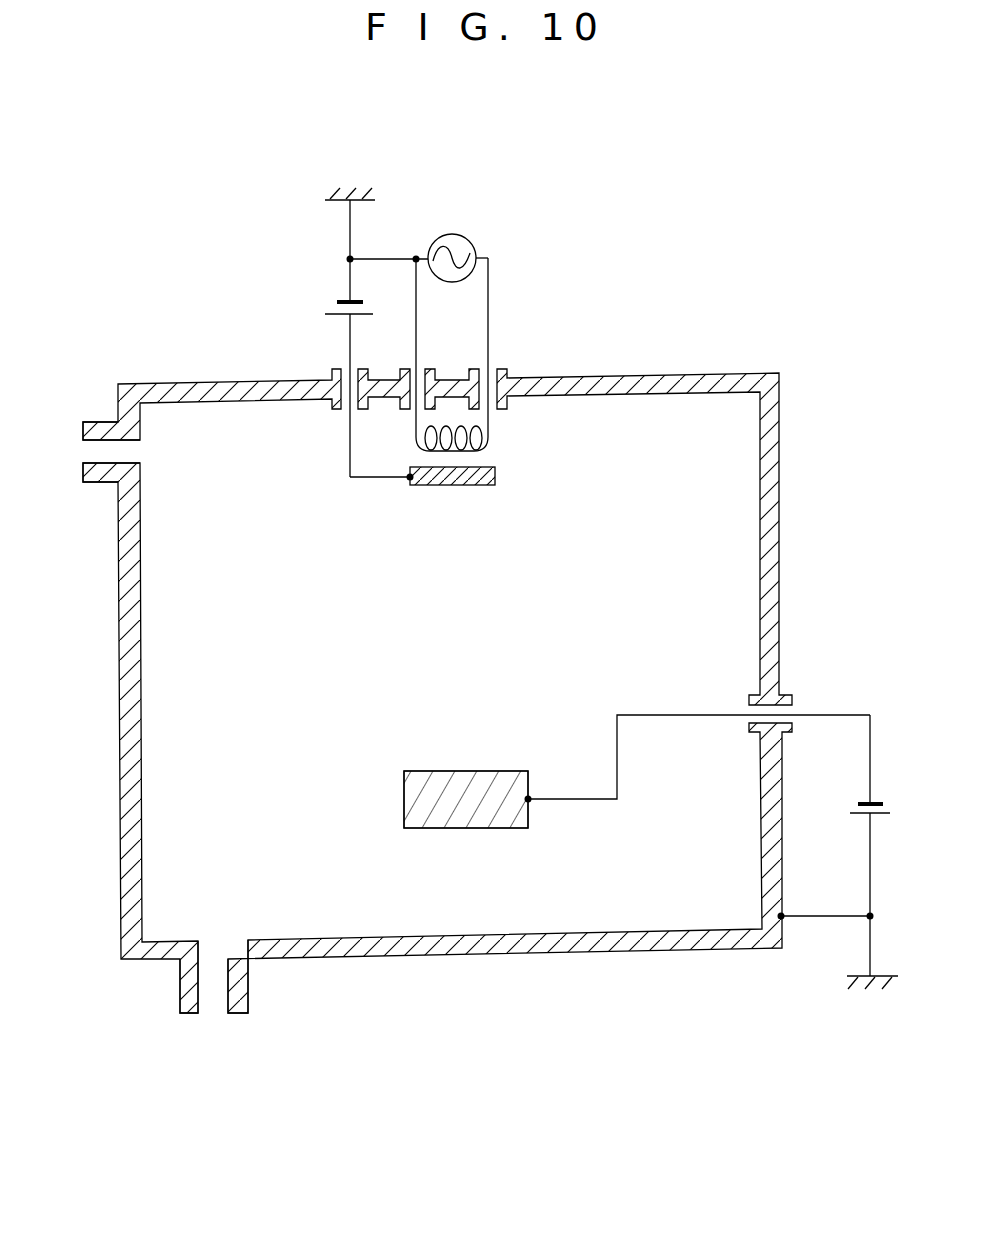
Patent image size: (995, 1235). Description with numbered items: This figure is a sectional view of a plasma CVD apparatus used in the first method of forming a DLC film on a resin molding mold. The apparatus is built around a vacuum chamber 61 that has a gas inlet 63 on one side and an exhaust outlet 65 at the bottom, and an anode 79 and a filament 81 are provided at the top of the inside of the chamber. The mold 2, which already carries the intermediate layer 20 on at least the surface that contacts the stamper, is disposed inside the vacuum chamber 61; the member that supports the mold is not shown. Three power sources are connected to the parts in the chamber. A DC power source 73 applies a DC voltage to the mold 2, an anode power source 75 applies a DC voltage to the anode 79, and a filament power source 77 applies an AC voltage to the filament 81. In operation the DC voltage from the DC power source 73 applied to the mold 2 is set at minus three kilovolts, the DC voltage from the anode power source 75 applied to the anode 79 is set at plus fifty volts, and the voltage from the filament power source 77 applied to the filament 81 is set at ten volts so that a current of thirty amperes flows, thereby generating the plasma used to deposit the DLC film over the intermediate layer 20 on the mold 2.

The mold 2 is at (457, 784).
The intermediate layer 20 is at (503, 770).
The vacuum chamber 61 is at (560, 955).
The gas inlet 63 is at (95, 456).
The exhaust outlet 65 is at (210, 1008).
The DC power source 73 is at (857, 818).
The anode power source 75 is at (325, 310).
The filament power source 77 is at (465, 234).
The anode 79 is at (453, 487).
The filament 81 is at (489, 435).